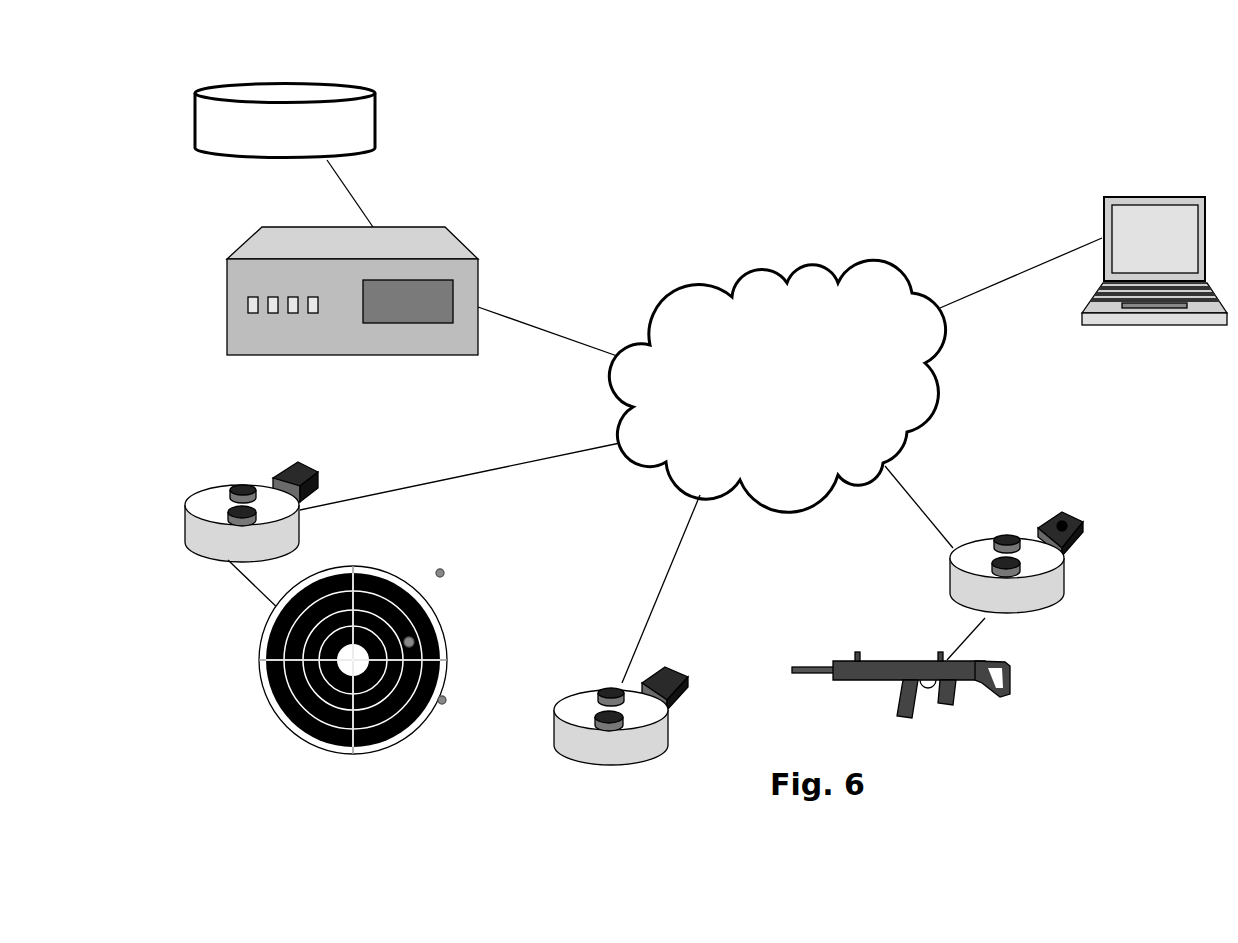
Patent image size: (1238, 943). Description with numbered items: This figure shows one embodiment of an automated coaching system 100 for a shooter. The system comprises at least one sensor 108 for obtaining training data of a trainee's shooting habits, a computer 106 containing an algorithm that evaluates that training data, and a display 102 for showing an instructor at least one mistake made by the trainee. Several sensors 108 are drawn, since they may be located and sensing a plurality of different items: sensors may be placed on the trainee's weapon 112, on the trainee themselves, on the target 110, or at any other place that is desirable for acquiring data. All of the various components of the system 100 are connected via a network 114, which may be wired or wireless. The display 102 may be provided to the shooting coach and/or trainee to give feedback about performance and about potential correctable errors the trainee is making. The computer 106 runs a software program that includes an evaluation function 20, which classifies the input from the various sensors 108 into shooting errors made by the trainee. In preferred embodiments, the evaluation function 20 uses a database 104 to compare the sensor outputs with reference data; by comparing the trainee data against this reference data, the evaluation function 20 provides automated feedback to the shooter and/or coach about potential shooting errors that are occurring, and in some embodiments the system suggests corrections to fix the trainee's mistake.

The automated coaching system 100 is at (777, 188).
The database 104 is at (375, 100).
The computer 106 is at (457, 238).
The evaluation function 20 is at (452, 302).
The network 114 is at (950, 375).
The display 102 is at (1133, 196).
The sensor 108 is at (322, 475).
The target 110 is at (440, 633).
The weapon 112 is at (965, 712).